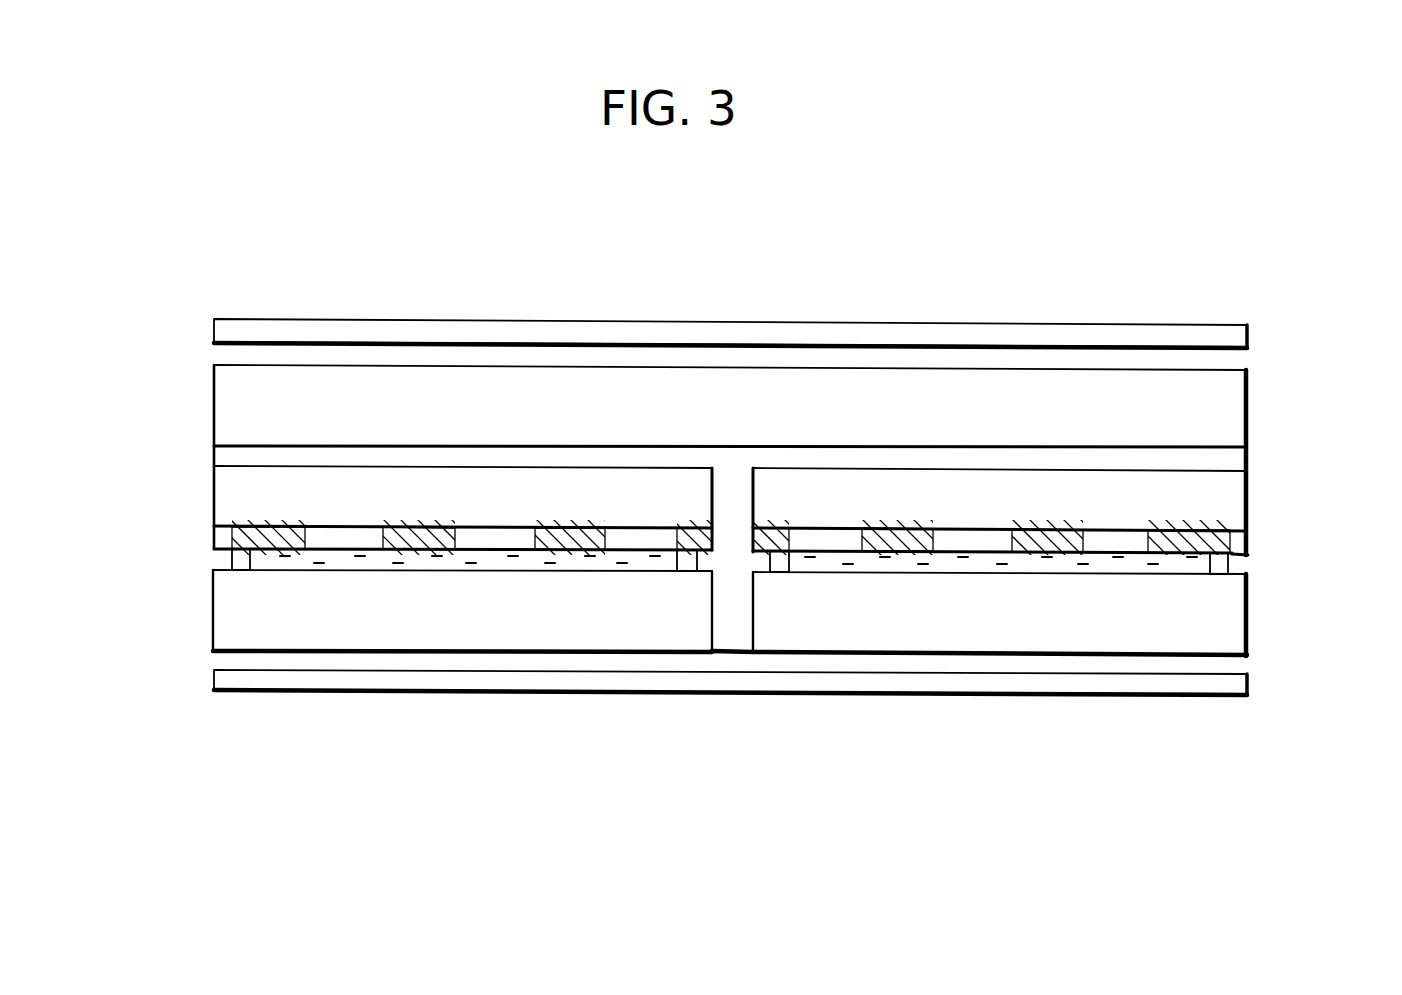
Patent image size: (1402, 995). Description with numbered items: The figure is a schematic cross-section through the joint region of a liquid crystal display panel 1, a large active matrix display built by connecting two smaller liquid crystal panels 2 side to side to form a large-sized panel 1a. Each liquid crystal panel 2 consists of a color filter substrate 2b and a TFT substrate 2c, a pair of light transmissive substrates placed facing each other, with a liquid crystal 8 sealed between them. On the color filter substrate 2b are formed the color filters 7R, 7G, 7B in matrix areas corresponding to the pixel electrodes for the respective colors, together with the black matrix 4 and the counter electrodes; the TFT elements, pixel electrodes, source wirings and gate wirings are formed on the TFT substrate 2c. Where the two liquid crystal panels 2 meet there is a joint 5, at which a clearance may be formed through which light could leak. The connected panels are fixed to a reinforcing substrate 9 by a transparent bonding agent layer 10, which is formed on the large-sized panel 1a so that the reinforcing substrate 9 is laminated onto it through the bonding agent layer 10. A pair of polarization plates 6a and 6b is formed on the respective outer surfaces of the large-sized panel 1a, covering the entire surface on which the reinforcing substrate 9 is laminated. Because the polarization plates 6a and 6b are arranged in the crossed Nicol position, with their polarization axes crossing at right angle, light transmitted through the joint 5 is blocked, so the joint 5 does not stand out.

The liquid crystal display panel 1 is at (753, 276).
The large-sized panel 1a is at (177, 632).
The liquid crystal panel 2 is at (1352, 468).
The color filter substrate 2b is at (1272, 468).
The TFT substrate 2c is at (1272, 575).
The black matrix 4 is at (236, 528).
The joint 5 is at (738, 668).
The polarization plate 6a is at (1068, 332).
The polarization plate 6b is at (680, 692).
The color filter 7R is at (343, 538).
The color filter 7G is at (494, 538).
The color filter 7B is at (640, 538).
The liquid crystal 8 is at (230, 560).
The reinforcing substrate 9 is at (1248, 407).
The transparent bonding agent layer 10 is at (230, 459).